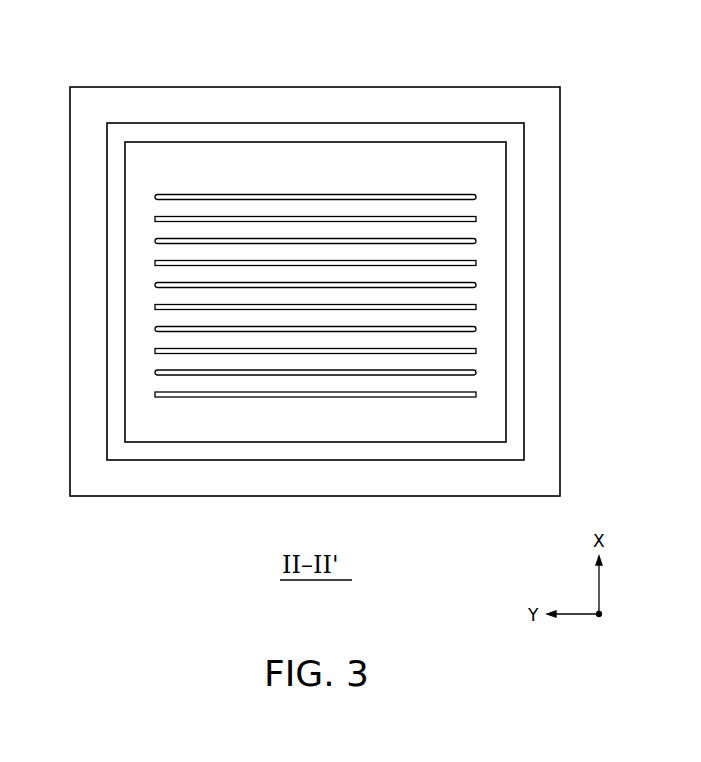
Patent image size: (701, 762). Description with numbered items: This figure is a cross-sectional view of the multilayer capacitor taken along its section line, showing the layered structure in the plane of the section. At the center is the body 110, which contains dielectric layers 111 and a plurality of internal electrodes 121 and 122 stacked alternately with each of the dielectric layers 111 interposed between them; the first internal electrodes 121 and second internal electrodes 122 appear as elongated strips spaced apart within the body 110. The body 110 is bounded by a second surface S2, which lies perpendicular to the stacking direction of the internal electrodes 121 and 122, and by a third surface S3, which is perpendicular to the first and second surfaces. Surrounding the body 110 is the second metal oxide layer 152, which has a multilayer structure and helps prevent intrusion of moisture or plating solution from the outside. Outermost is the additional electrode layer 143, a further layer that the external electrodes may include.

The body 110 is at (270, 140).
The dielectric layers 111 is at (420, 207).
The first internal electrodes 121 is at (327, 196).
The second internal electrodes 122 is at (378, 217).
The additional electrode layer 143 is at (558, 128).
The second metal oxide layer 152 is at (515, 246).
The second surface S2 is at (214, 140).
The third surface S3 is at (124, 336).